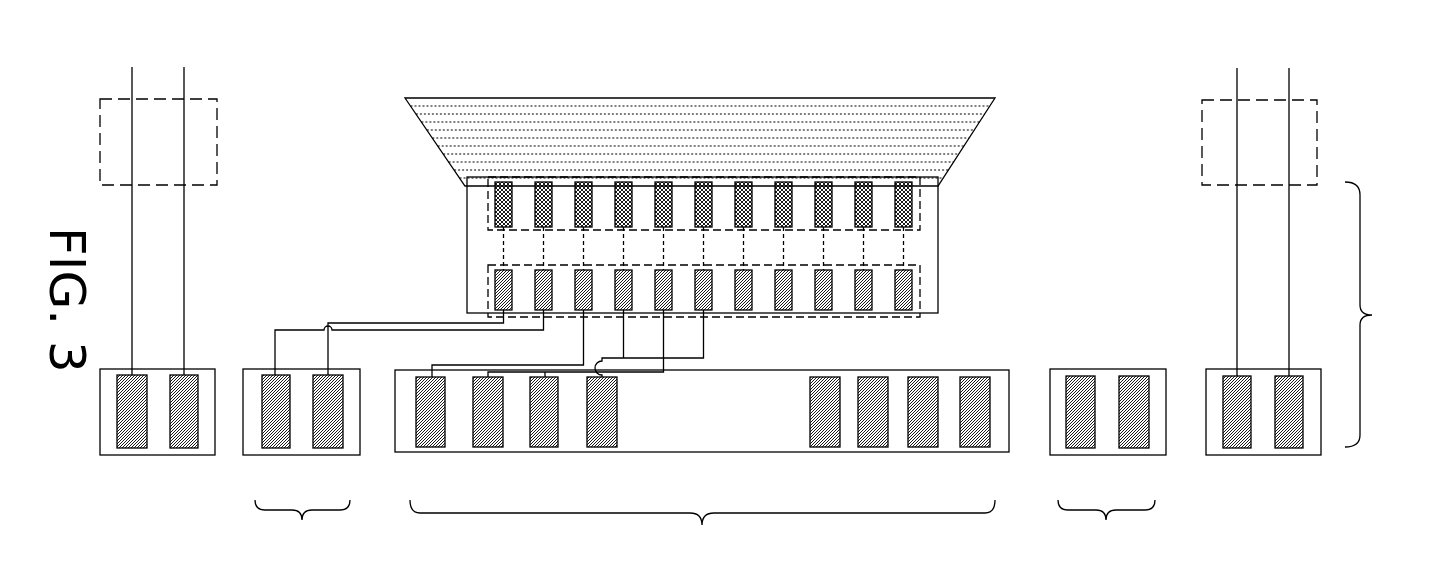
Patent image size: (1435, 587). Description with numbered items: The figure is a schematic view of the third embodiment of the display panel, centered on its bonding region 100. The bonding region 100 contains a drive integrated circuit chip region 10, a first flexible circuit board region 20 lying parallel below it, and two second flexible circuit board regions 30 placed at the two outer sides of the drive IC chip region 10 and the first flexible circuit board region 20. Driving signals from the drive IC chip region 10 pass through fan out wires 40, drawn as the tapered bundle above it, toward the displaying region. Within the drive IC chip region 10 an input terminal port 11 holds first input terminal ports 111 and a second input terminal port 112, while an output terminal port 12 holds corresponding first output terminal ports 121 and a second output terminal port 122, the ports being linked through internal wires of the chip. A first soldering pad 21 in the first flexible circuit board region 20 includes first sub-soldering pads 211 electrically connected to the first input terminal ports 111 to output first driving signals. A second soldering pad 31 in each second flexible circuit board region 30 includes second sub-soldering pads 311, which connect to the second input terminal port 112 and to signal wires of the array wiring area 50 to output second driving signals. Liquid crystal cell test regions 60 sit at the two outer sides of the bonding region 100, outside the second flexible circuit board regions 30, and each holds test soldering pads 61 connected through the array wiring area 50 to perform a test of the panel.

The bonding region 100 is at (1383, 314).
The drive integrated circuit chip region 10 is at (939, 244).
The input terminal port 11 is at (710, 312).
The first input terminal port 111 is at (500, 285).
The second input terminal port 112 is at (713, 295).
The output terminal port 12 is at (709, 145).
The first output terminal port 121 is at (497, 195).
The second output terminal port 122 is at (720, 190).
The first flexible circuit board region 20 is at (702, 415).
The first soldering pad 21 is at (702, 529).
The first sub-soldering pad 211 is at (490, 437).
The second flexible circuit board region 30 is at (703, 389).
The second soldering pad 31 is at (705, 529).
The second sub-soldering pad 311 is at (330, 435).
The fan out wires 40 is at (885, 96).
The array wiring area 50 is at (156, 96).
The liquid crystal cell test region 60 is at (710, 413).
The test soldering pad 61 is at (185, 427).